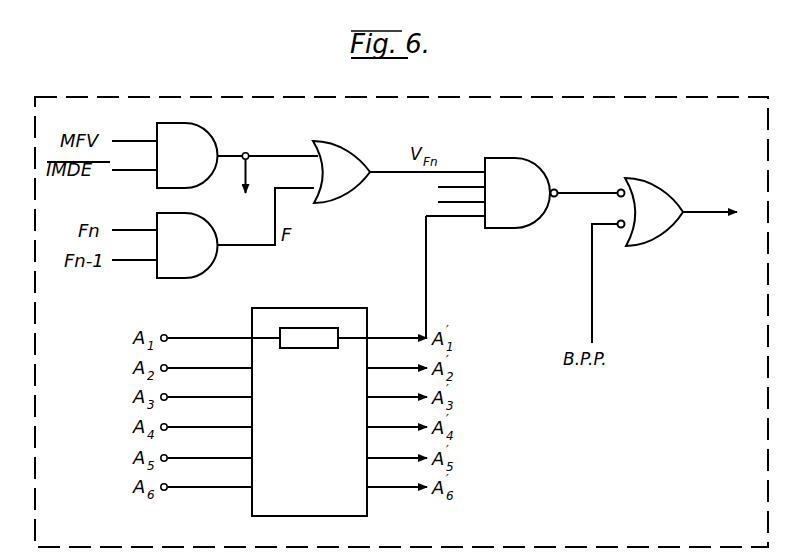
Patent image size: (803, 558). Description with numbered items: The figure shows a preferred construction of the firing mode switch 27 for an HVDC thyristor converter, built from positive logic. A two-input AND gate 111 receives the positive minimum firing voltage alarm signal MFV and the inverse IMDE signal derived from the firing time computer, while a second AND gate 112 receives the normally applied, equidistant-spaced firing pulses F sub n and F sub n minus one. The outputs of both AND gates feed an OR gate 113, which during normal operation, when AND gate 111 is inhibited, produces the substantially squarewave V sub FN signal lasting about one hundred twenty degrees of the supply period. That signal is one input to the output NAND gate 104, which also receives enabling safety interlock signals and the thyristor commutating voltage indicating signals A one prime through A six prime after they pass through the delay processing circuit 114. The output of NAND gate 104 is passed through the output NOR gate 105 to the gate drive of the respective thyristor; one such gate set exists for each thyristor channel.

The firing mode switch 27 is at (601, 97).
The output NAND gate 104 is at (527, 160).
The output NOR gate 105 is at (661, 186).
The AND gate 111 is at (207, 125).
The AND gate 112 is at (195, 279).
The OR gate 113 is at (350, 149).
The delay processing circuit 114 is at (250, 504).